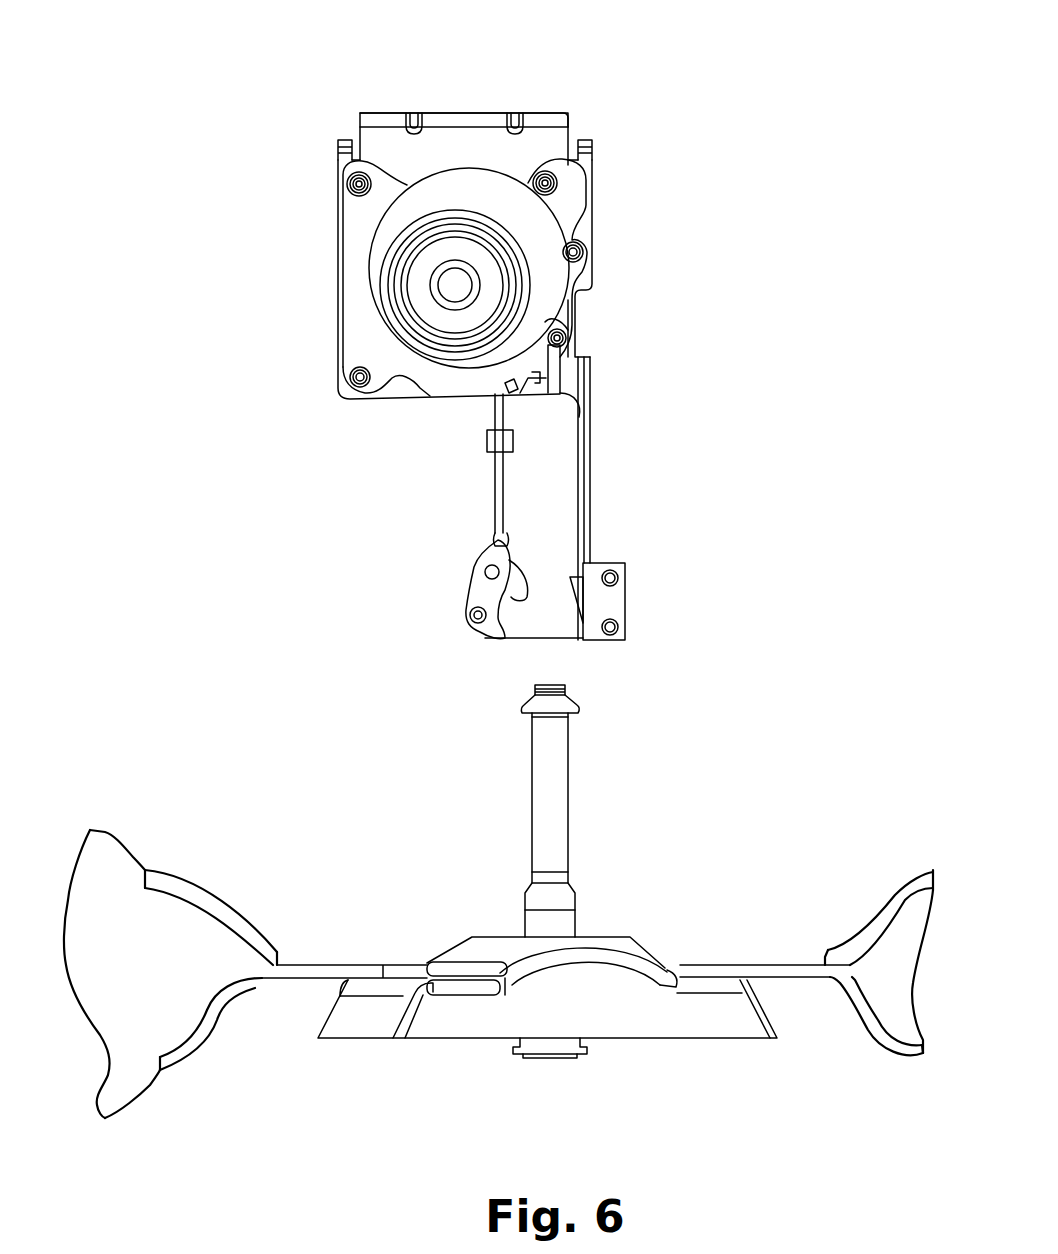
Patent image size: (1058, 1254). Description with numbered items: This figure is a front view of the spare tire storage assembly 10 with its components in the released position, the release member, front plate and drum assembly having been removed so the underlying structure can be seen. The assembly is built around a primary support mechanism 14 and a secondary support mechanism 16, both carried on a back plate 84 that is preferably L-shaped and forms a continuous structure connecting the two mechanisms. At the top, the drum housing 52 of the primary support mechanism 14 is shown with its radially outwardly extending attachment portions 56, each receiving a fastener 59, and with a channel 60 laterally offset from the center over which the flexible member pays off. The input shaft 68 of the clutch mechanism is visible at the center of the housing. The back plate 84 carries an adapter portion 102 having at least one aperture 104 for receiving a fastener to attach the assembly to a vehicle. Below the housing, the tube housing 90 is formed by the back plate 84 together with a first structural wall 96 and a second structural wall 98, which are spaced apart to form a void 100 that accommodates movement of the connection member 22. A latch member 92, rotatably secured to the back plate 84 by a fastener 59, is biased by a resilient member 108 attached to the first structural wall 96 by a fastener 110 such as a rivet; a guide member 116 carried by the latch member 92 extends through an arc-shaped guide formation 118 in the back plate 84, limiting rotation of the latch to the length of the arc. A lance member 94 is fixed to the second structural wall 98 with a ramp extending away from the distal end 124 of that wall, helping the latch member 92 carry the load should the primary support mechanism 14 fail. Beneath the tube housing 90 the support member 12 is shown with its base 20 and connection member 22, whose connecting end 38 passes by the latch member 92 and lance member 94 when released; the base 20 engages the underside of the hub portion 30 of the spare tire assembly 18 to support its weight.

The spare tire storage assembly 10 is at (607, 67).
The support member 12 is at (606, 920).
The primary support mechanism 14 is at (604, 250).
The secondary support mechanism 16 is at (617, 537).
The spare tire assembly 18 is at (338, 960).
The base 20 is at (713, 1022).
The connection member 22 is at (558, 852).
The hub portion 30 is at (790, 973).
The connecting end 38 is at (560, 685).
The drum housing 52 is at (337, 272).
The attachment portions 56 is at (345, 172).
The fastener 59 is at (560, 185).
The channel 60 is at (574, 394).
The input shaft 68 is at (456, 292).
The back plate 84 is at (384, 149).
The tube housing 90 is at (593, 505).
The latch member 92 is at (490, 628).
The lance member 94 is at (582, 587).
The first structural wall 96 is at (495, 470).
The second structural wall 98 is at (592, 430).
The void 100 is at (551, 492).
The adapter portion 102 is at (461, 122).
The aperture 104 is at (517, 116).
The resilient member 108 is at (492, 540).
The fastener 110 is at (487, 443).
The guide member 116 is at (485, 571).
The guide formation 118 is at (525, 602).
The distal end 124 is at (594, 642).